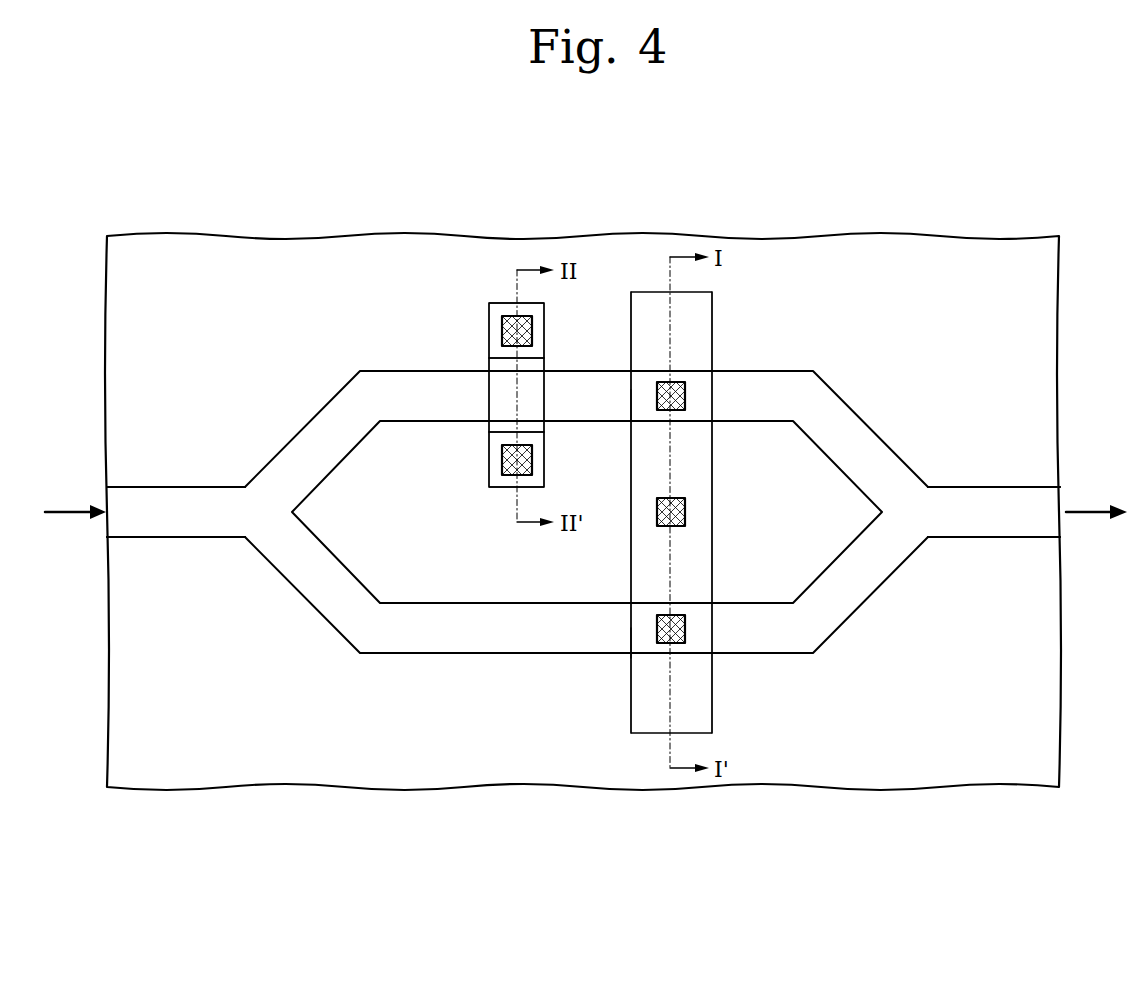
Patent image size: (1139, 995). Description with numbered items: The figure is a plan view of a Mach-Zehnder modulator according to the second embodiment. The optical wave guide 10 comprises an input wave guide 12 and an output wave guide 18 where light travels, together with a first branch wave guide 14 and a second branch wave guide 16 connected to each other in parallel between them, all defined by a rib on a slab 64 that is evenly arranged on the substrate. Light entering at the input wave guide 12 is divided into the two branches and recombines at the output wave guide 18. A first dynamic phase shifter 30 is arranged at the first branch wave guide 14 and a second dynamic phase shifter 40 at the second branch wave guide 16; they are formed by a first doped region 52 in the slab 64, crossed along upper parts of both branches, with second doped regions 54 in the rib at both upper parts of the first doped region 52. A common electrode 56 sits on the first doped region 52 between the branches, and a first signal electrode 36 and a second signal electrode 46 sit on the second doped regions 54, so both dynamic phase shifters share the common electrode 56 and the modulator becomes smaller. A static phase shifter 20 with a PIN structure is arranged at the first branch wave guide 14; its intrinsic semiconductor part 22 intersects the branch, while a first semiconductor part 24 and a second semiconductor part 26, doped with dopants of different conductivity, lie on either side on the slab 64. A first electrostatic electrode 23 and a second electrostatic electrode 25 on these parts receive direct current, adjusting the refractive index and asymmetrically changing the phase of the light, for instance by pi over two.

The optical wave guide 10 is at (157, 382).
The input wave guide 12 is at (177, 495).
The first branch wave guide 14 is at (294, 444).
The second branch wave guide 16 is at (285, 572).
The output wave guide 18 is at (1013, 495).
The static phase shifter 20 is at (368, 177).
The intrinsic semiconductor part 22 is at (497, 398).
The first electrostatic electrode 23 is at (532, 331).
The first semiconductor part 24 is at (503, 310).
The second electrostatic electrode 25 is at (532, 463).
The second semiconductor part 26 is at (495, 460).
The first dynamic phase shifter 30 is at (626, 408).
The first signal electrode 36 is at (687, 395).
The second dynamic phase shifter 40 is at (626, 645).
The second signal electrode 46 is at (687, 629).
The first doped region 52 is at (697, 325).
The second doped regions 54 is at (698, 380).
The common electrode 56 is at (685, 512).
The slab 64 is at (983, 252).